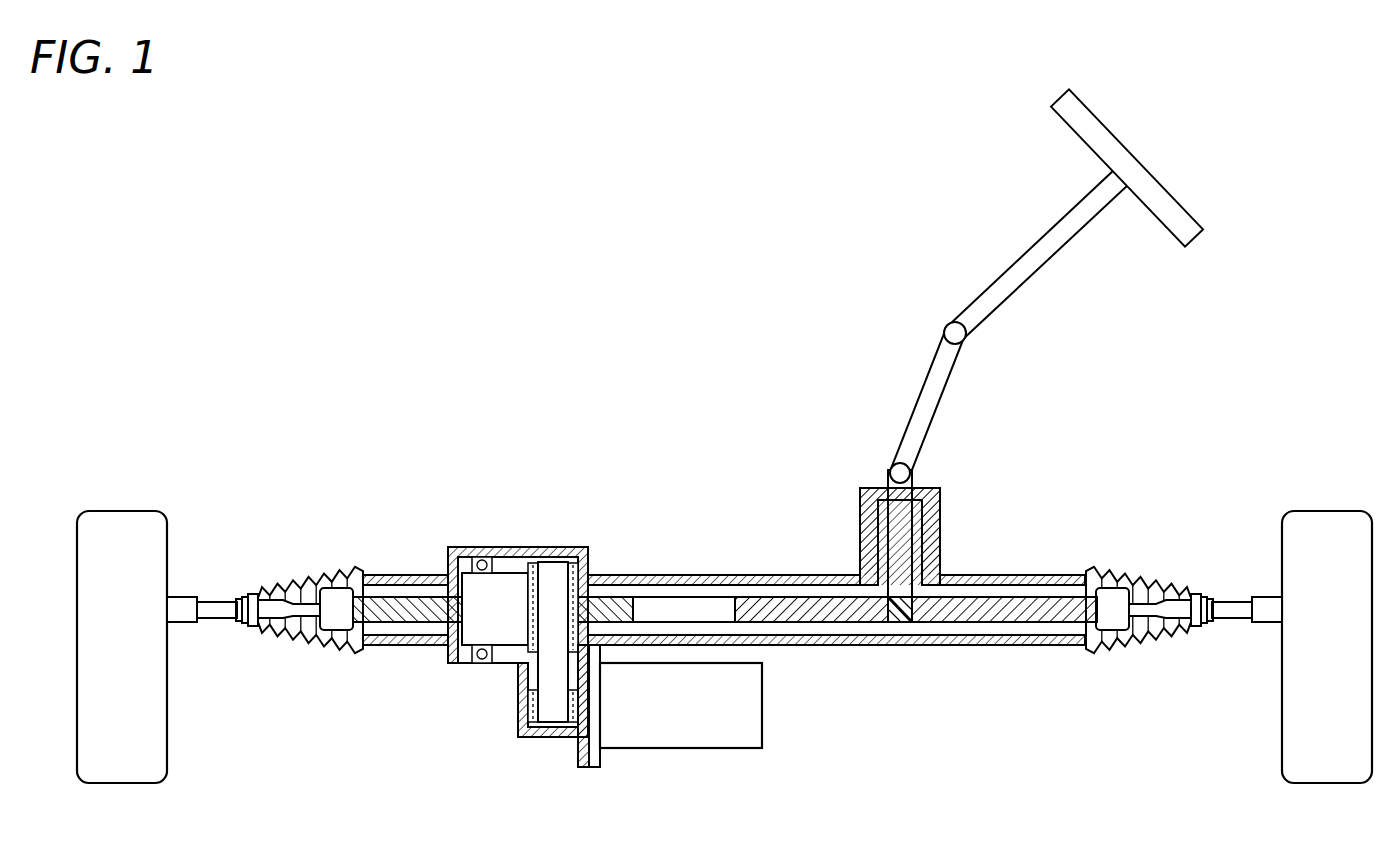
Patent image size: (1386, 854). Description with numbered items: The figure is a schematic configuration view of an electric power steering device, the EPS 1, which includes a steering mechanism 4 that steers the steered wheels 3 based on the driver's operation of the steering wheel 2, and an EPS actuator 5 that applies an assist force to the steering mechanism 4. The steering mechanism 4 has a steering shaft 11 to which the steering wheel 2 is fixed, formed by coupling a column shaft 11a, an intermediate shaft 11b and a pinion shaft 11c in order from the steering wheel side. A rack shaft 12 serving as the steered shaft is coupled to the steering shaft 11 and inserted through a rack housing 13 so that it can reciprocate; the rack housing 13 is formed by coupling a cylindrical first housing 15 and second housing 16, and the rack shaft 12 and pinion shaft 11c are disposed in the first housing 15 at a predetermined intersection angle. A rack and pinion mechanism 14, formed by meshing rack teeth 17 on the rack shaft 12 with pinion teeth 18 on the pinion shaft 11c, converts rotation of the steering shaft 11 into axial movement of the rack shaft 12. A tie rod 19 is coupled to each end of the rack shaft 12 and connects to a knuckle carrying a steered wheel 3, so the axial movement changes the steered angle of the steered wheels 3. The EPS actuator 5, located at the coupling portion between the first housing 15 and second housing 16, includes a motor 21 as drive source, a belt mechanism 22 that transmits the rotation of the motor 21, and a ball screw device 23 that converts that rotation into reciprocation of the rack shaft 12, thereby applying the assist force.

The EPS 1 is at (337, 185).
The steering wheel 2 is at (1108, 124).
The steered wheels 3 is at (120, 510).
The steering mechanism 4 is at (658, 370).
The EPS actuator 5 is at (440, 778).
The steering shaft 11 is at (903, 282).
The column shaft 11a is at (968, 297).
The intermediate shaft 11b is at (922, 392).
The pinion shaft 11c is at (891, 513).
The rack shaft 12 is at (682, 597).
The rack housing 13 is at (505, 608).
The rack and pinion mechanism 14 is at (882, 631).
The first housing 15 is at (553, 610).
The second housing 16 is at (475, 608).
The rack teeth 17 is at (968, 618).
The pinion teeth 18 is at (896, 624).
The tie rod 19 is at (216, 623).
The motor 21 is at (680, 749).
The belt mechanism 22 is at (520, 703).
The ball screw device 23 is at (465, 660).